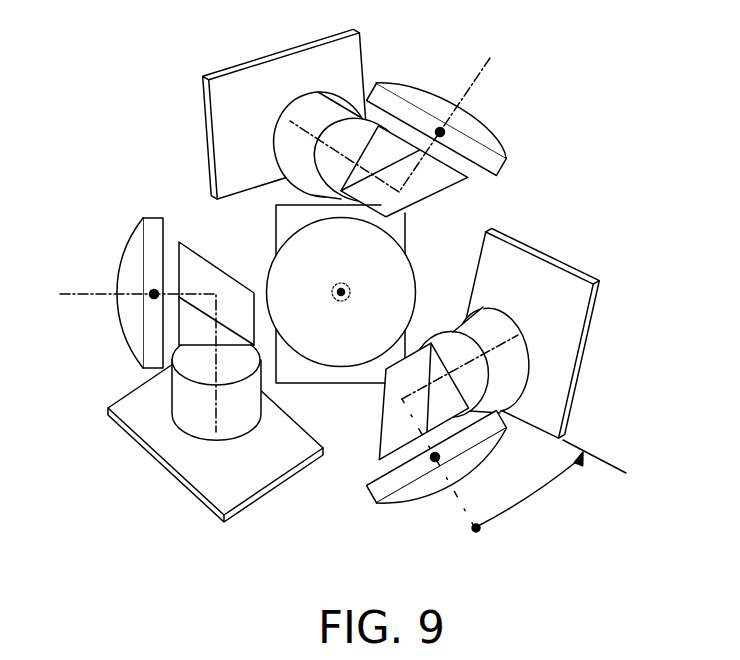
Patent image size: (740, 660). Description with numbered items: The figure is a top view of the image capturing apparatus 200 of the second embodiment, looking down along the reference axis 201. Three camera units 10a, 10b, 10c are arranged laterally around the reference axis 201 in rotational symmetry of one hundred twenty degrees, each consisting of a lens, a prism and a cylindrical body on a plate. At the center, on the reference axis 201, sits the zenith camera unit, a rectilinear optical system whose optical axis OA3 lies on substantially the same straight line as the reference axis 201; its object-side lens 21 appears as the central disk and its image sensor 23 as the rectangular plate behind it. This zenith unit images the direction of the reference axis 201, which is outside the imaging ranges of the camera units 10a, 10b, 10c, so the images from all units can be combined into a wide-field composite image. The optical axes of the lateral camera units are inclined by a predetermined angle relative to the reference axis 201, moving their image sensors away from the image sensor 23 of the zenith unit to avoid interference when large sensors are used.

The image capturing apparatus 200 is at (86, 41).
The camera unit 10a is at (533, 427).
The camera unit 10b is at (121, 329).
The camera unit 10c is at (204, 111).
The reference axis 201 is at (341, 292).
The optical axis OA3 is at (341, 292).
The object-side lens 21 is at (415, 291).
The image sensor 23 is at (405, 335).